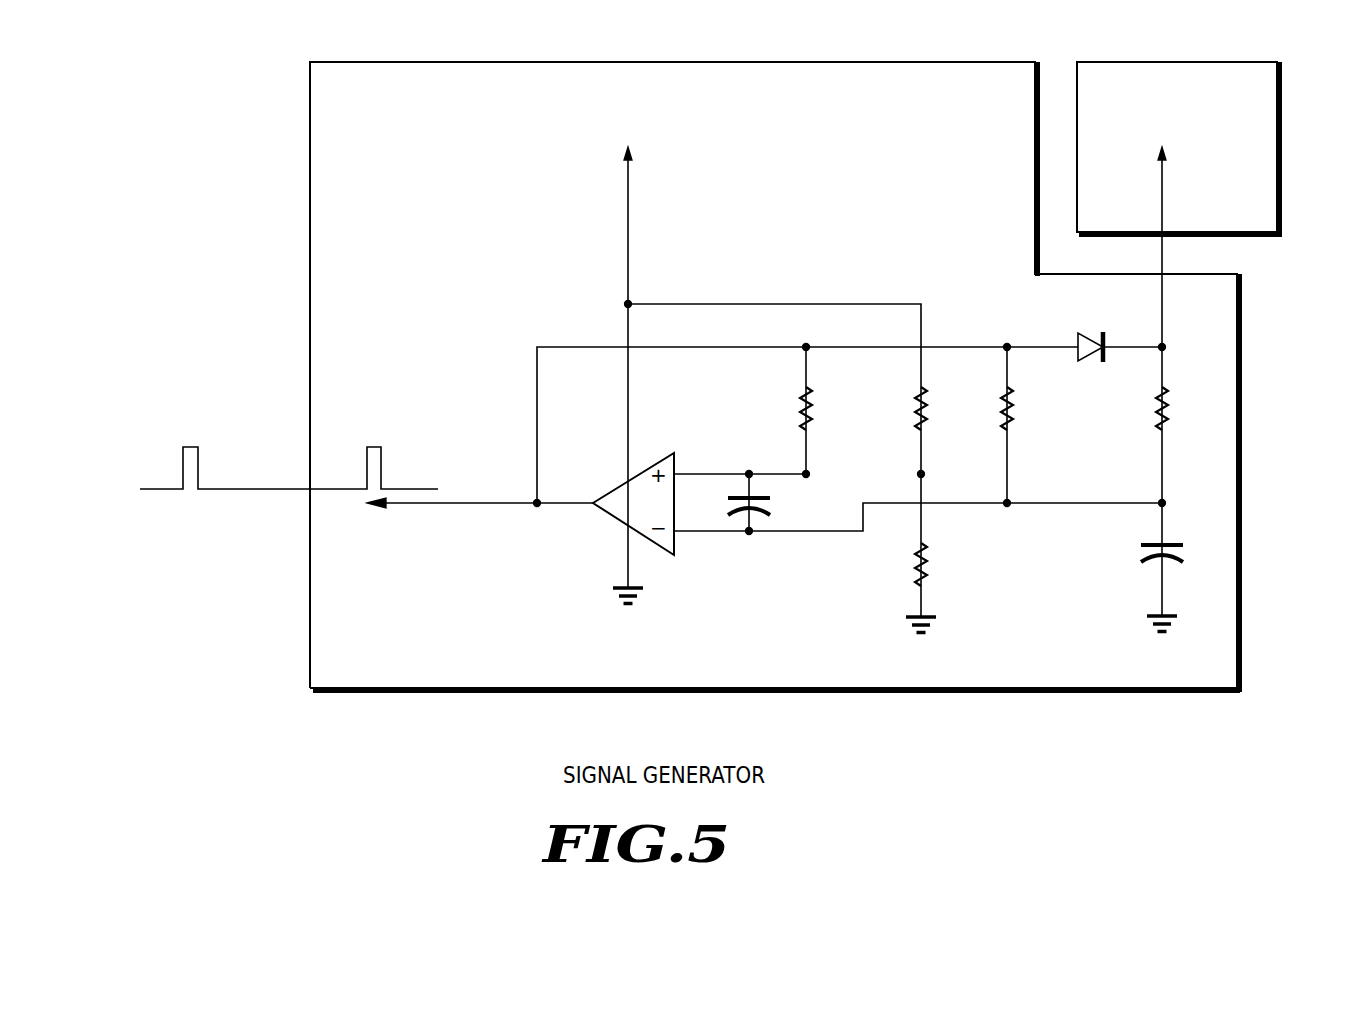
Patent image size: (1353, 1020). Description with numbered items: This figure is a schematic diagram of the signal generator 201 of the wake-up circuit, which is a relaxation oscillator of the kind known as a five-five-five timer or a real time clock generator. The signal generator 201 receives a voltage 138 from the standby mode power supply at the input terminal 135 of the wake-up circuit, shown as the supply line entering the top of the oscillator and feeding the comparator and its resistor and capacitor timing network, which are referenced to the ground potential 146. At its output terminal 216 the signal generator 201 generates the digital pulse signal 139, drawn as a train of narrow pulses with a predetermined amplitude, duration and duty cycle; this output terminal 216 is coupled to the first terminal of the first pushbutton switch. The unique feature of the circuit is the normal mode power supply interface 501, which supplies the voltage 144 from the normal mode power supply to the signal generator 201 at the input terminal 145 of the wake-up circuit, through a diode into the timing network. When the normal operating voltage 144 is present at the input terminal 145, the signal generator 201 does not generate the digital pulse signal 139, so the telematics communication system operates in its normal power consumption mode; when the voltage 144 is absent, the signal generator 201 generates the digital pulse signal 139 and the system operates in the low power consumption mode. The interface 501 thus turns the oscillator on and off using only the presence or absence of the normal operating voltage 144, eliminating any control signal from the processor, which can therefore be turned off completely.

The signal generator 201 is at (853, 788).
The normal mode power supply interface 501 is at (1282, 99).
The voltage 138 is at (648, 125).
The input terminal 135 is at (630, 198).
The voltage 144 is at (1181, 124).
The input terminal 145 is at (1164, 181).
The ground potential 146 is at (940, 622).
The digital pulse signal 139 is at (246, 486).
The output terminal 216 is at (457, 505).